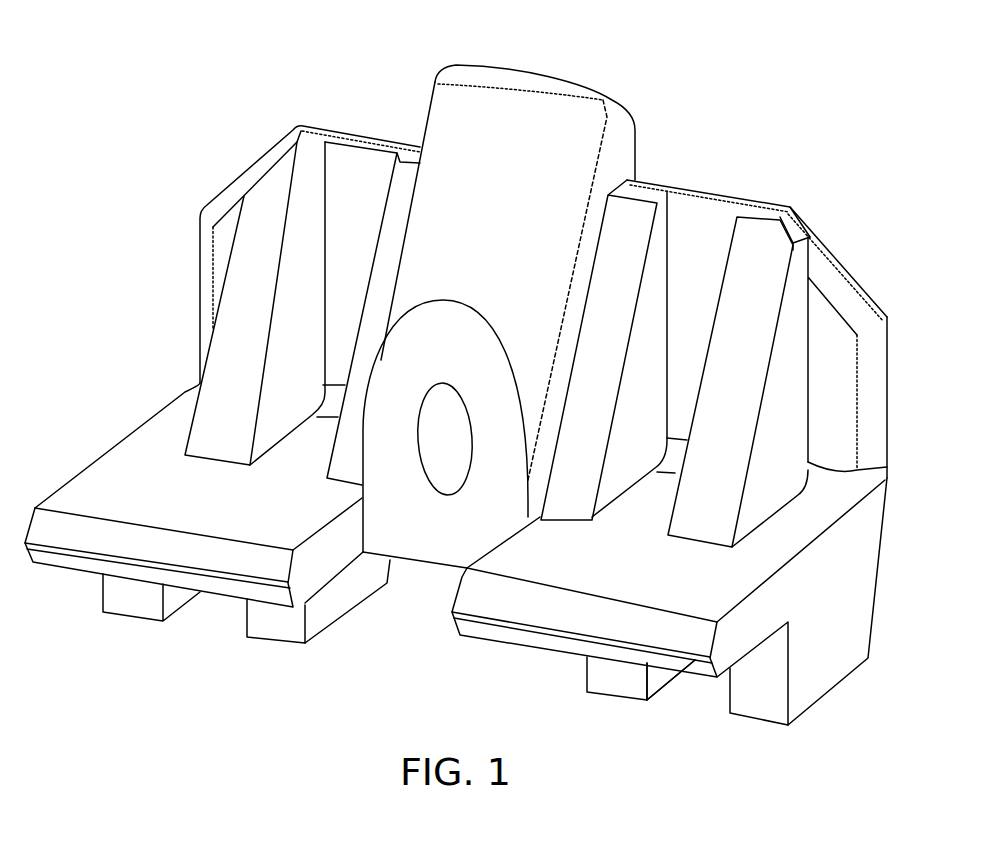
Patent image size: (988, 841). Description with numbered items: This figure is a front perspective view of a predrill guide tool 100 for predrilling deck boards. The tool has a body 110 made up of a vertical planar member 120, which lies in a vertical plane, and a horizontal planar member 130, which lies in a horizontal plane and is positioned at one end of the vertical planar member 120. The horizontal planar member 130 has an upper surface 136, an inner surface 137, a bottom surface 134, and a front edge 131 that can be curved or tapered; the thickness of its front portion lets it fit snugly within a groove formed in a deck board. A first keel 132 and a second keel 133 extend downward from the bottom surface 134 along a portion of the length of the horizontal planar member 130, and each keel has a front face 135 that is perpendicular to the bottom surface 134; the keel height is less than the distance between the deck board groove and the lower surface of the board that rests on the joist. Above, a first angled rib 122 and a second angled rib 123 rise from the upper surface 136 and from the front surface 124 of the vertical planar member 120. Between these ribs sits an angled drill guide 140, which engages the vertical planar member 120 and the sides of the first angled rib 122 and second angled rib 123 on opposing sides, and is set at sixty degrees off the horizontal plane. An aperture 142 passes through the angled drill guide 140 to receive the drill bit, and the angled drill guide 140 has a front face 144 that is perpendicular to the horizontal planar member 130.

The predrill guide tool 100 is at (126, 94).
The body 110 is at (875, 383).
The vertical planar member 120 is at (818, 278).
The first angled rib 122 is at (278, 180).
The second angled rib 123 is at (752, 240).
The front surface 124 is at (352, 158).
The horizontal planar member 130 is at (783, 555).
The front edge 131 is at (695, 658).
The first keel 132 is at (268, 627).
The second keel 133 is at (615, 685).
The bottom surface 134 is at (528, 648).
The front face 135 is at (635, 677).
The upper surface 136 is at (105, 475).
The inner surface 137 is at (318, 568).
The angled drill guide 140 is at (495, 100).
The aperture 142 is at (445, 472).
The front face 144 is at (453, 557).